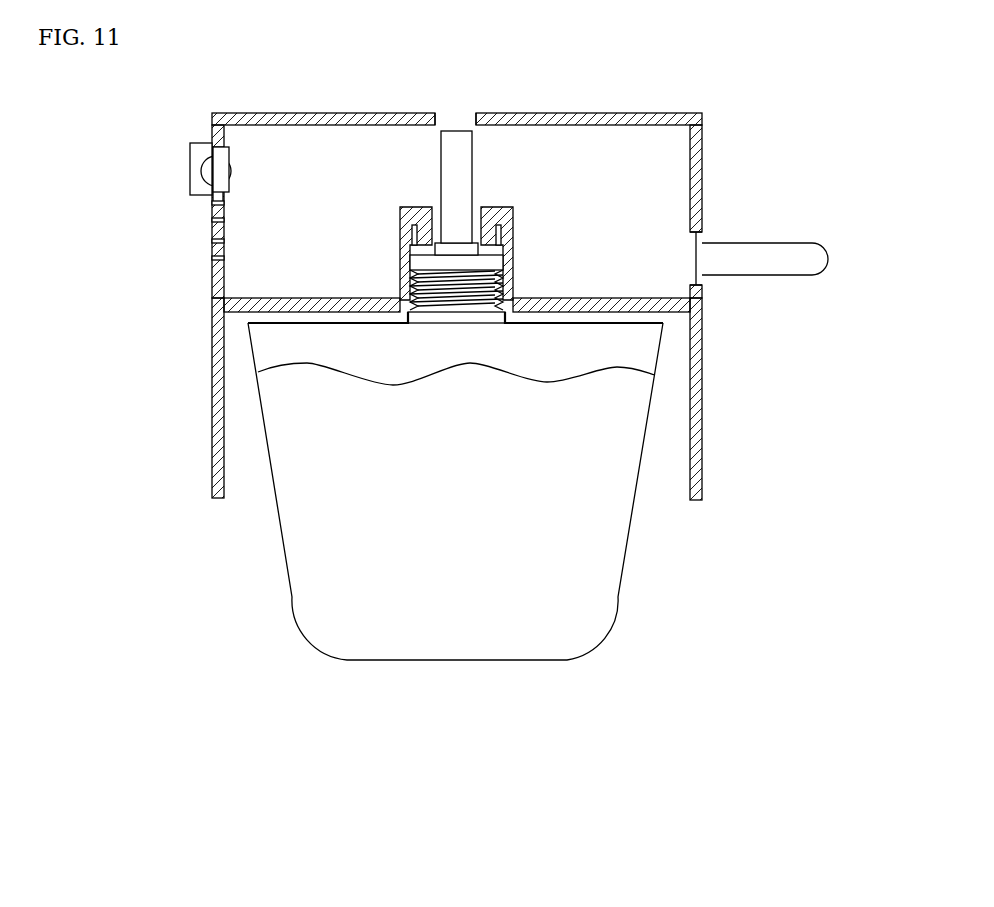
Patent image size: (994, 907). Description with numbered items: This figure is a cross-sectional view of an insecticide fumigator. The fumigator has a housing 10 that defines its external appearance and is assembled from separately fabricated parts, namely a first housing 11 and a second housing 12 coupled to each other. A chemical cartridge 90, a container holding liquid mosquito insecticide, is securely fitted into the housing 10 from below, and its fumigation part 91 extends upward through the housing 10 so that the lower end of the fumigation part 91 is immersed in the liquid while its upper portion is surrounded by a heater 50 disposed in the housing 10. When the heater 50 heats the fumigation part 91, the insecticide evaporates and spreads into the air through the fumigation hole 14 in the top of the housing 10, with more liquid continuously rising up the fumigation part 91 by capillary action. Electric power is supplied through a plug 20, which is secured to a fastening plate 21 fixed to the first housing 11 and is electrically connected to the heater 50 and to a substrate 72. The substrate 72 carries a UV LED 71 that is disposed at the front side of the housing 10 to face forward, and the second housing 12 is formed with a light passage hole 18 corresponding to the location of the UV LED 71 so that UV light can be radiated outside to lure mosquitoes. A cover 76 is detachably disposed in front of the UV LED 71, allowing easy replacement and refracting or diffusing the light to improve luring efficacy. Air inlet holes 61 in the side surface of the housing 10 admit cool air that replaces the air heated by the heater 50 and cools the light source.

The housing 10 is at (563, 306).
The first housing 11 is at (542, 399).
The second housing 12 is at (702, 190).
The fumigation hole 14 is at (476, 122).
The light passage hole 18 is at (230, 155).
The plug 20 is at (760, 270).
The fastening plate 21 is at (702, 238).
The heater 50 is at (417, 207).
The air inlet hole 61 is at (213, 220).
The UV LED 71 is at (221, 164).
The substrate 72 is at (207, 152).
The cover 76 is at (194, 178).
The chemical cartridge 90 is at (452, 640).
The fumigation part 91 is at (452, 137).